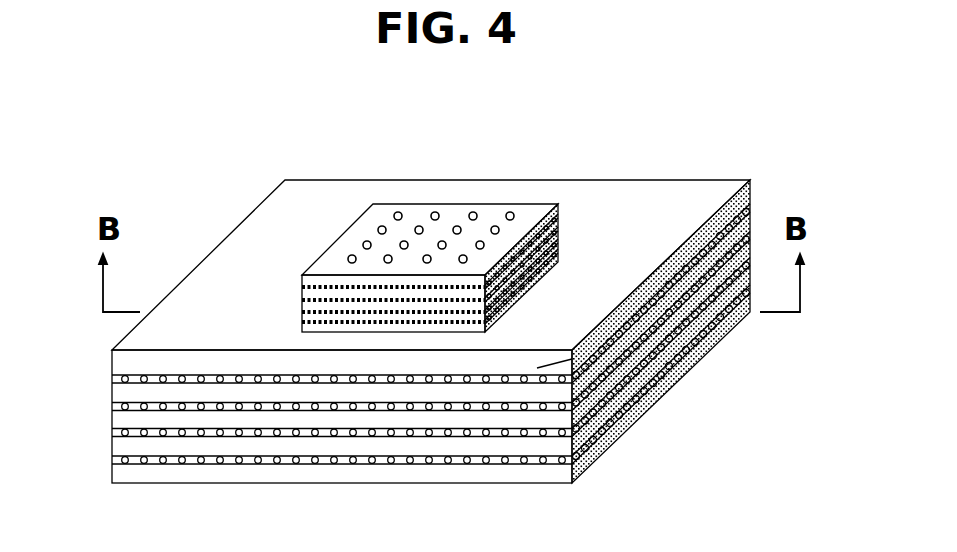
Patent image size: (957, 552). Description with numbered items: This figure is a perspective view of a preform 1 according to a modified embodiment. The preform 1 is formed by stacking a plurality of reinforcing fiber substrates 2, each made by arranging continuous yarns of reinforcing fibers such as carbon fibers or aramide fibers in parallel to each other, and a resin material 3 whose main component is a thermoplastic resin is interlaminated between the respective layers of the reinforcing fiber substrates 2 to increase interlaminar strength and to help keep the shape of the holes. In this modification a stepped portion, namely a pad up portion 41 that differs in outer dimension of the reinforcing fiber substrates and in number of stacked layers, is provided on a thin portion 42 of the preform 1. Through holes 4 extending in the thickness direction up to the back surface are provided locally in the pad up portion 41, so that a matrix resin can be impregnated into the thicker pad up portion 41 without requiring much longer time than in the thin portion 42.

The preform 1 is at (687, 160).
The reinforcing fiber substrate 2 is at (627, 426).
The resin material 3 is at (530, 388).
The through hole 4 is at (473, 215).
The pad up portion 41 is at (418, 217).
The thin portion 42 is at (270, 240).